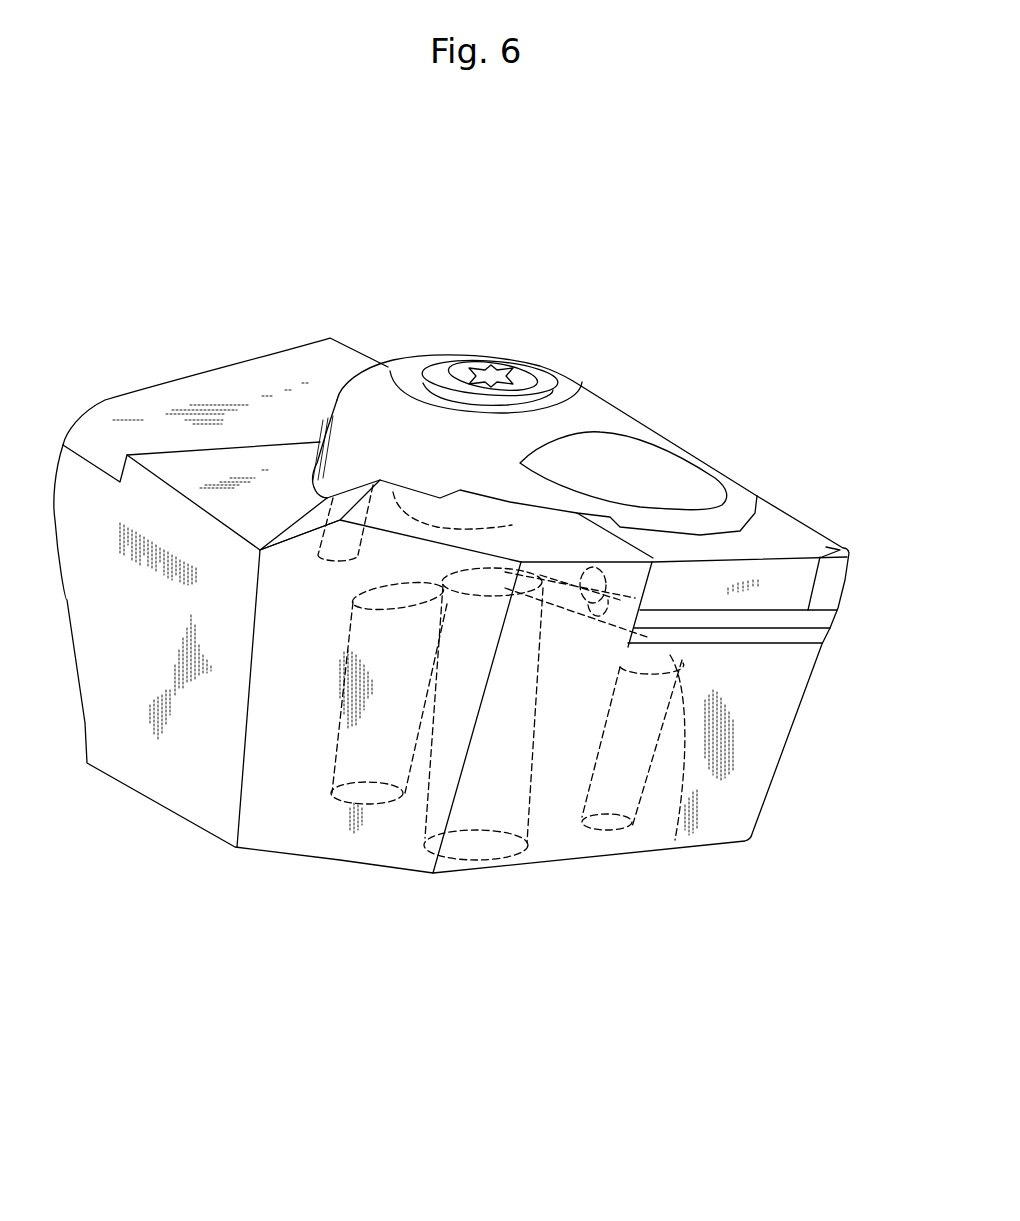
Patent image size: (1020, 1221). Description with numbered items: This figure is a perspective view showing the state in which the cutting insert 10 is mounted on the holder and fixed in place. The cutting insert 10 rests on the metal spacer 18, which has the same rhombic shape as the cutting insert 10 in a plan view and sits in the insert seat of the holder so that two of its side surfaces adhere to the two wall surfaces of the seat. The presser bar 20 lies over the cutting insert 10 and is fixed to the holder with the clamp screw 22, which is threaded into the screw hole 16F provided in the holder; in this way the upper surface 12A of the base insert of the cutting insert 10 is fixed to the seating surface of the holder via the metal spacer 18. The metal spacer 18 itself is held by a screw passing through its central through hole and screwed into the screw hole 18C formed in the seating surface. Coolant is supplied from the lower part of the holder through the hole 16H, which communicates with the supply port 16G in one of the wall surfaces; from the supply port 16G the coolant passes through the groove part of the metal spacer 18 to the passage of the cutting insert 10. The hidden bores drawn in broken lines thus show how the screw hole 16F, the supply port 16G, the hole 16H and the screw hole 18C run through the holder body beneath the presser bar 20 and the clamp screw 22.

The cutting insert 10 is at (778, 492).
The upper surface 12A is at (755, 543).
The screw hole 16F is at (393, 492).
The supply port 16G is at (583, 603).
The hole 16H is at (472, 848).
The metal spacer 18 is at (730, 618).
The screw hole 18C is at (675, 840).
The presser bar 20 is at (610, 412).
The clamp screw 22 is at (525, 377).